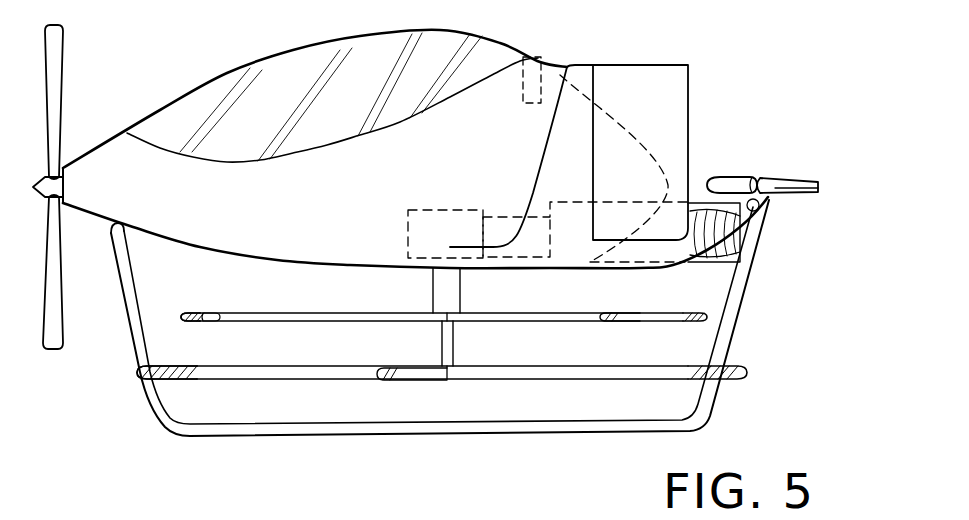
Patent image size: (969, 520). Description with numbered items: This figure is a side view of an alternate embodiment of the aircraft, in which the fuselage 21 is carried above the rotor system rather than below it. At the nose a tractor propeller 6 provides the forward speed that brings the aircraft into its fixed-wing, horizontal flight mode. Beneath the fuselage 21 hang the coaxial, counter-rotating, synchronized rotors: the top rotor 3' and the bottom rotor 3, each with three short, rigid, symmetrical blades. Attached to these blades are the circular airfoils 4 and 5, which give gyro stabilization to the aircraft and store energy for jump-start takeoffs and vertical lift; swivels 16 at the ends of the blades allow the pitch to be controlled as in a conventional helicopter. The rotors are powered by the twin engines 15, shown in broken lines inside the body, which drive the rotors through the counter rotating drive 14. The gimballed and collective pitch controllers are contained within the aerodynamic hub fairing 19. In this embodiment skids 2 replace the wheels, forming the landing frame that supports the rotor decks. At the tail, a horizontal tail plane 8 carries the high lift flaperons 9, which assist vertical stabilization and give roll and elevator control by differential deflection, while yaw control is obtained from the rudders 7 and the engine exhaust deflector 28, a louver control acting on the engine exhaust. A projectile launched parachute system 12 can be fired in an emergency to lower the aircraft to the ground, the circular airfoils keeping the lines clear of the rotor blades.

The wheels 2 is at (143, 402).
The bottom rotor 3 is at (442, 323).
The top rotor 3' is at (444, 297).
The circular airfoil 4 is at (200, 366).
The circular airfoil 5 is at (205, 307).
The tractor propeller 6 is at (67, 78).
The rudder 7 is at (690, 107).
The tail fin 8 is at (748, 170).
The high lift flaperon 9 is at (795, 179).
The projectile launched parachute system 12 is at (538, 58).
The counter rotating drive 14 is at (407, 210).
The engine 15 is at (572, 203).
The swivel 16 is at (385, 381).
The aerodynamic hub fairing 19 is at (617, 117).
The fuselage 21 is at (213, 254).
The engine exhaust deflector 28 is at (745, 238).